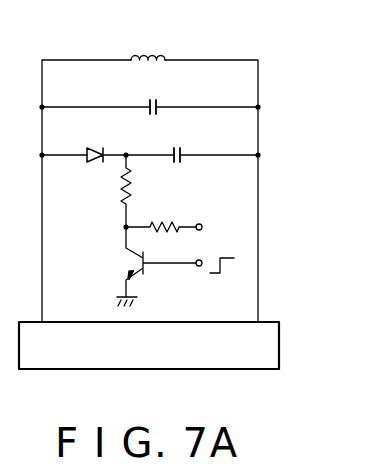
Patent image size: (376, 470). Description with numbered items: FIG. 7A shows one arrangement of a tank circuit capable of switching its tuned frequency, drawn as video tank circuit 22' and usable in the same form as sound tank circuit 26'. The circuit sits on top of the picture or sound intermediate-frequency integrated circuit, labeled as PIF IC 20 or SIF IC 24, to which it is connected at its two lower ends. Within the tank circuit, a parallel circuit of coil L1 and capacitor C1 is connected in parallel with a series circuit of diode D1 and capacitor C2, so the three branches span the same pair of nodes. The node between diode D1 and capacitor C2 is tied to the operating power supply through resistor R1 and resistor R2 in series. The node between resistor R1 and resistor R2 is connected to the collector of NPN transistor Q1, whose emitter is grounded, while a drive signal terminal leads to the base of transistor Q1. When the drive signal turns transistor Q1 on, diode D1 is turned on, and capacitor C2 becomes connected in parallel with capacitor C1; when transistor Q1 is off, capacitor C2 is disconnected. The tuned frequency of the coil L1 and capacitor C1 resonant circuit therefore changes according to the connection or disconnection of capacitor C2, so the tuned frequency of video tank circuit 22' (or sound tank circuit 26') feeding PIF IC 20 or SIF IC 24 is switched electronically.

The video tank circuit 22' is at (187, 170).
The sound tank circuit 26' is at (187, 170).
The PIF IC 20 is at (183, 353).
The SIF IC 24 is at (280, 345).
The coil L1 is at (152, 55).
The capacitor C1 is at (153, 100).
The capacitor C2 is at (178, 148).
The diode D1 is at (99, 149).
The resistor R1 is at (123, 186).
The resistor R2 is at (169, 220).
The NPN transistor Q1 is at (126, 262).